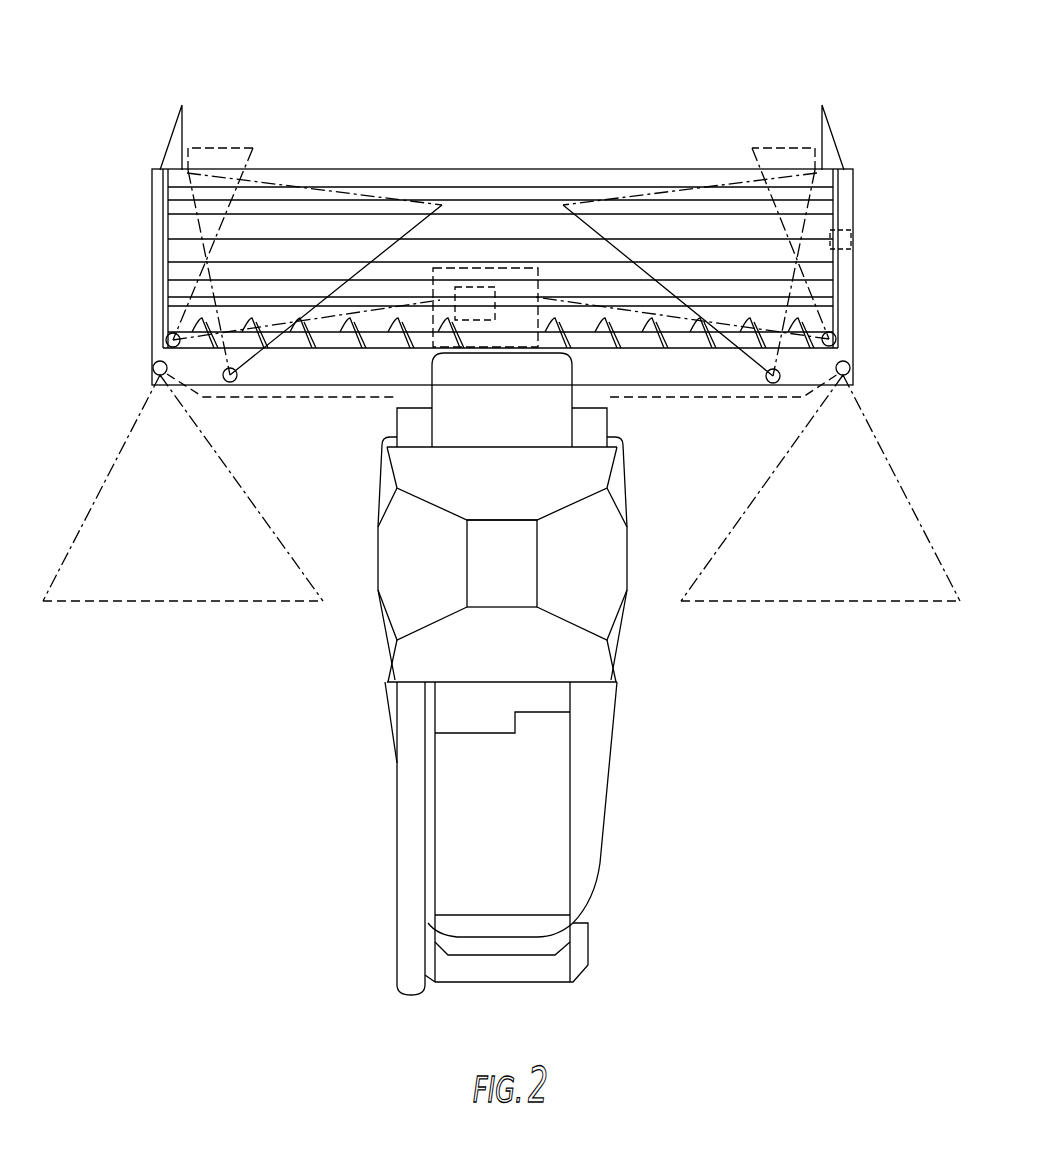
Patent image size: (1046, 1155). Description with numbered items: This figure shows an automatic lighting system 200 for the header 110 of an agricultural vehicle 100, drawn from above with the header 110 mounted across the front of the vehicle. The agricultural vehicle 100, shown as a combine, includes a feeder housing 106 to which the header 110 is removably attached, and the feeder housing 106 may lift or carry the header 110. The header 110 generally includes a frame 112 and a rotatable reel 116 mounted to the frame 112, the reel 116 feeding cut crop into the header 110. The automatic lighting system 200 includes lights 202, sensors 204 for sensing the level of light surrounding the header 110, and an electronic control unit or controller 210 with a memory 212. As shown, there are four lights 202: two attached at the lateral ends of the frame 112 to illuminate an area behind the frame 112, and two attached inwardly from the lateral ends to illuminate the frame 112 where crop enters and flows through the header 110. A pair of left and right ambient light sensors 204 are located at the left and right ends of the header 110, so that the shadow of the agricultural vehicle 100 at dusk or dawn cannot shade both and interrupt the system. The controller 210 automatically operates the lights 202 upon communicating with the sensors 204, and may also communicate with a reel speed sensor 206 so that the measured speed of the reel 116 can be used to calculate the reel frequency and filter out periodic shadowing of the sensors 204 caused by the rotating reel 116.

The agricultural vehicle 100 is at (630, 661).
The feeder housing 106 is at (600, 417).
The header 110 is at (286, 113).
The frame 112 is at (153, 285).
The reel 116 is at (390, 168).
The automatic lighting system 200 is at (529, 235).
The light 202 is at (153, 371).
The sensor 204 is at (166, 340).
The reel speed sensor 206 is at (853, 240).
The controller 210 is at (467, 268).
The memory 212 is at (487, 287).